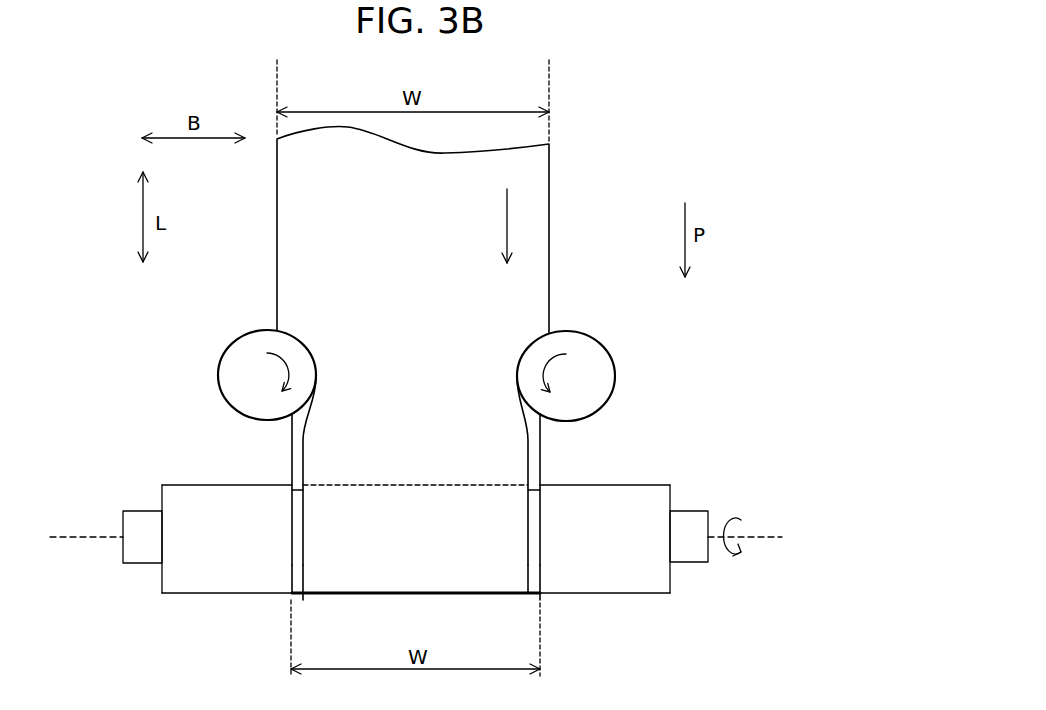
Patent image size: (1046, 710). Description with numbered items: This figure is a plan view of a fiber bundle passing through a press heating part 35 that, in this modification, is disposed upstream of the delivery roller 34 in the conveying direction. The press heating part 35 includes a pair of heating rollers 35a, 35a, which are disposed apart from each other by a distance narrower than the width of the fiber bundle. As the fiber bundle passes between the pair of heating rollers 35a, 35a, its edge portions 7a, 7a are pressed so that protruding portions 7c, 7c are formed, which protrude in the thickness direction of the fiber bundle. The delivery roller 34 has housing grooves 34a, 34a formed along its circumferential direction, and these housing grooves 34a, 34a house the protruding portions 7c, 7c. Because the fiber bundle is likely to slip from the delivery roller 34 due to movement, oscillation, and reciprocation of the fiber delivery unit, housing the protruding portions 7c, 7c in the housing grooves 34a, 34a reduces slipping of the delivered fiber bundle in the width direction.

The press heating part 35 is at (418, 337).
The heating roller 35a is at (233, 378).
The edge portion 7a is at (292, 515).
The protruding portion 7c is at (300, 598).
The delivery roller 34 is at (613, 588).
The housing groove 34a is at (302, 558).